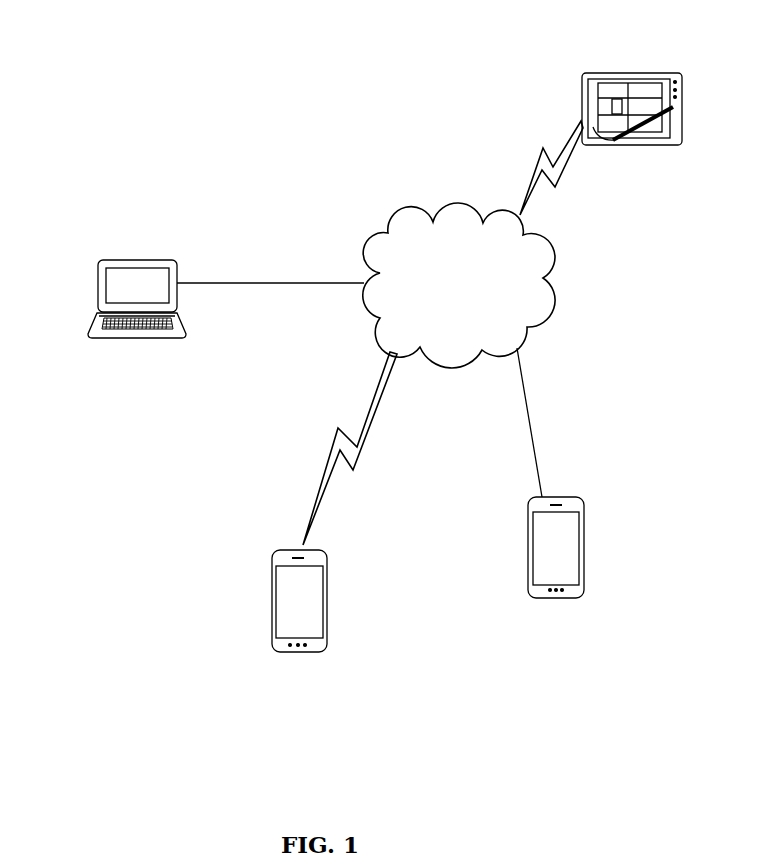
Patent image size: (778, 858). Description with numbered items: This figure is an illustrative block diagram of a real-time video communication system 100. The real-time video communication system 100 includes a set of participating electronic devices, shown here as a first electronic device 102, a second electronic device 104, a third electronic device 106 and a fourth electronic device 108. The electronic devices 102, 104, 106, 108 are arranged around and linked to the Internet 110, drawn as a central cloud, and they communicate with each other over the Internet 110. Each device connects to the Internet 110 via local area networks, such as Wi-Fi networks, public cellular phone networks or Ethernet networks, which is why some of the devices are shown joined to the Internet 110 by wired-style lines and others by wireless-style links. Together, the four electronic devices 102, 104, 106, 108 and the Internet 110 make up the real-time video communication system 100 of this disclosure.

The real-time video communication system 100 is at (155, 41).
The electronic device 102 is at (100, 282).
The electronic device 104 is at (280, 588).
The electronic device 106 is at (583, 553).
The electronic device 108 is at (585, 84).
The Internet 110 is at (369, 245).